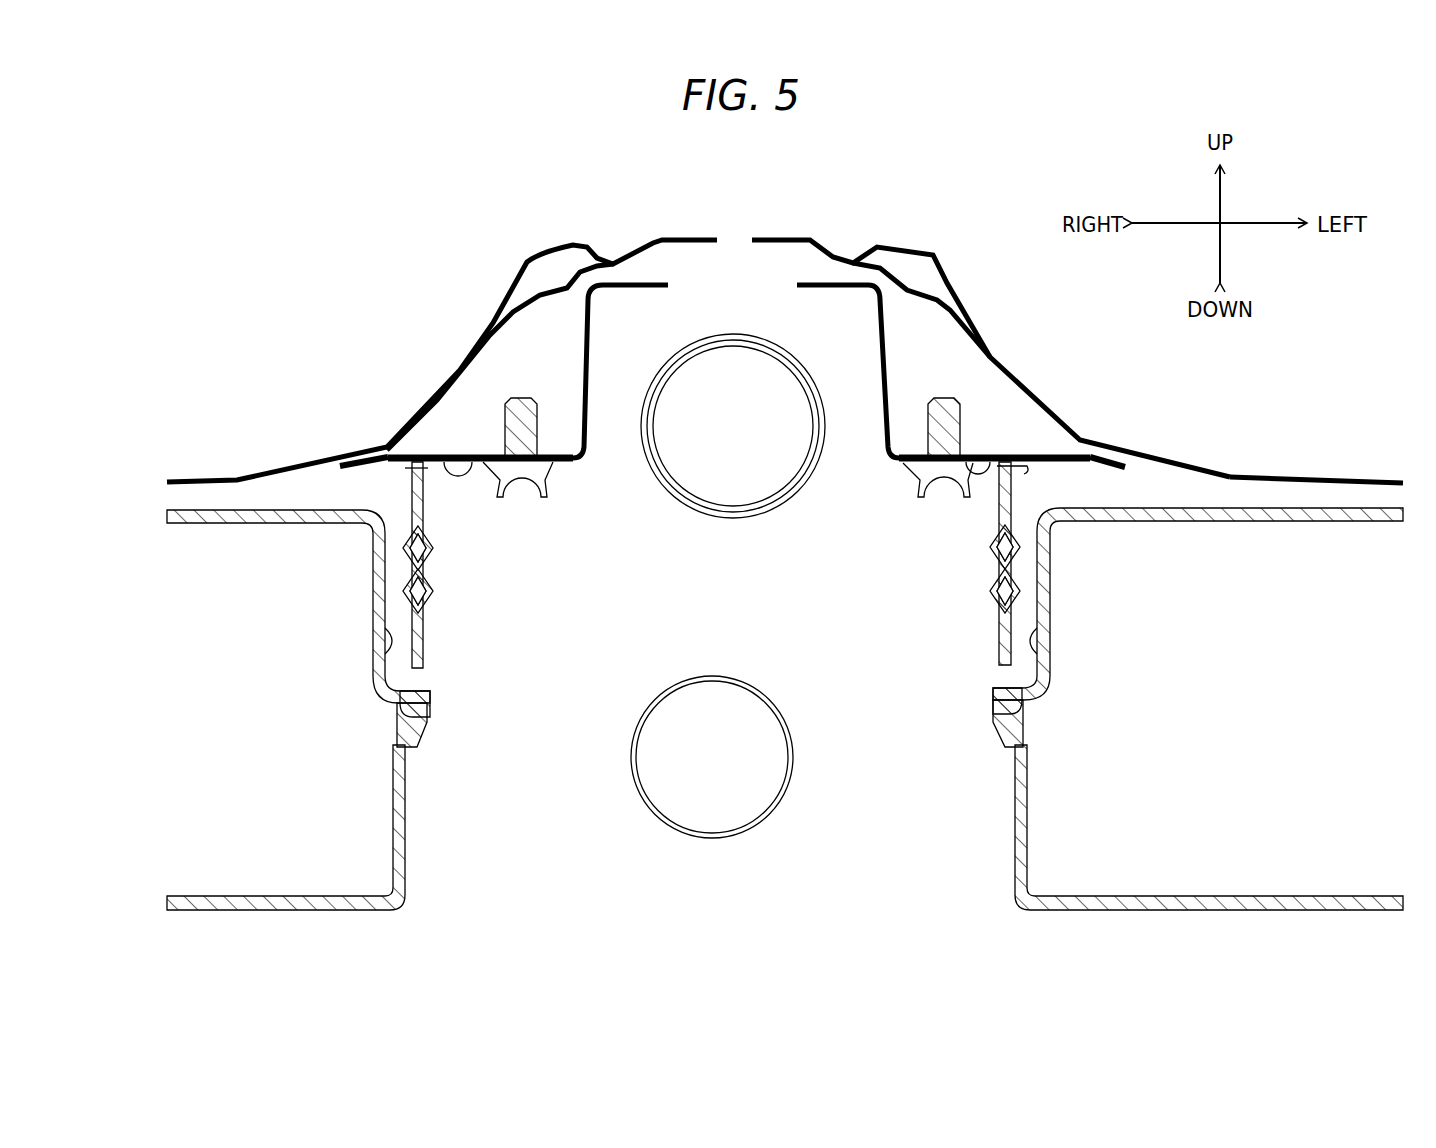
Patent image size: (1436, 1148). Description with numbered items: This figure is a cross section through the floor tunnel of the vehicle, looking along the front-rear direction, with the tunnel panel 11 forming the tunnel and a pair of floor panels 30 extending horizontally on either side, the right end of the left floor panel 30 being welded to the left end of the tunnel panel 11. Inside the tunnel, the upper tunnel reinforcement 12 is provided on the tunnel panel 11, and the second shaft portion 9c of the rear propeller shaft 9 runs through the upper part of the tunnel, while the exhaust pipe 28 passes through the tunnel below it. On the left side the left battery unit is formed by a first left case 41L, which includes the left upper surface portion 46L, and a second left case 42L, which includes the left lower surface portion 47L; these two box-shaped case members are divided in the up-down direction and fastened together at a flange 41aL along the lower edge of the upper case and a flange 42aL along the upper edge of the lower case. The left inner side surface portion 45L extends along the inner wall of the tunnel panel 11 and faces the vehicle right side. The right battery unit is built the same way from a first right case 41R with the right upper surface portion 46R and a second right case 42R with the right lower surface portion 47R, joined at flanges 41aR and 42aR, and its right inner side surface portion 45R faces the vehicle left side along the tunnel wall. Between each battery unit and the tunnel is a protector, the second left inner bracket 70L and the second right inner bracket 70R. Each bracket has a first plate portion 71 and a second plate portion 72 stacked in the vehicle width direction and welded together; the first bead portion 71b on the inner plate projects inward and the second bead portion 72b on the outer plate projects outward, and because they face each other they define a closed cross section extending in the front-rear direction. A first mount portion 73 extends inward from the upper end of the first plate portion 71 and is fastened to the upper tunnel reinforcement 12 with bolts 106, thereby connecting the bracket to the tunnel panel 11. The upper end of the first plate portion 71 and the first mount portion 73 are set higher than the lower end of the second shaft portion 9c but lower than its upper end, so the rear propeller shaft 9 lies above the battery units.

The upper tunnel reinforcement 12 is at (877, 343).
The floor panel 30 is at (1345, 483).
The first mount portion 73 is at (437, 457).
The tunnel panel 11 is at (1103, 448).
The bolt 106 is at (514, 397).
The right upper surface portion 46R is at (200, 512).
The first right case 41R is at (298, 545).
The left upper surface portion 46L is at (1173, 508).
The first left case 41L is at (1198, 541).
The right inner side surface portion 45R is at (372, 661).
The left inner side surface portion 45L is at (1050, 662).
The flange 41aR is at (427, 700).
The flange 41aL is at (992, 702).
The flange 42aR is at (427, 737).
The flange 42aL is at (1000, 733).
The right lower surface portion 47R is at (207, 916).
The second right case 42R is at (286, 831).
The left lower surface portion 47L is at (1222, 910).
The second left case 42L is at (1209, 829).
The first bead portion 71b is at (433, 548).
The first plate portion 71 is at (716, 565).
The second bead portion 72b is at (403, 548).
The second plate portion 72 is at (713, 574).
The second right inner bracket 70R is at (467, 658).
The second left inner bracket 70L is at (965, 637).
The second shaft portion 9c is at (713, 518).
The rear propeller shaft 9 is at (733, 464).
The exhaust pipe 28 is at (710, 842).